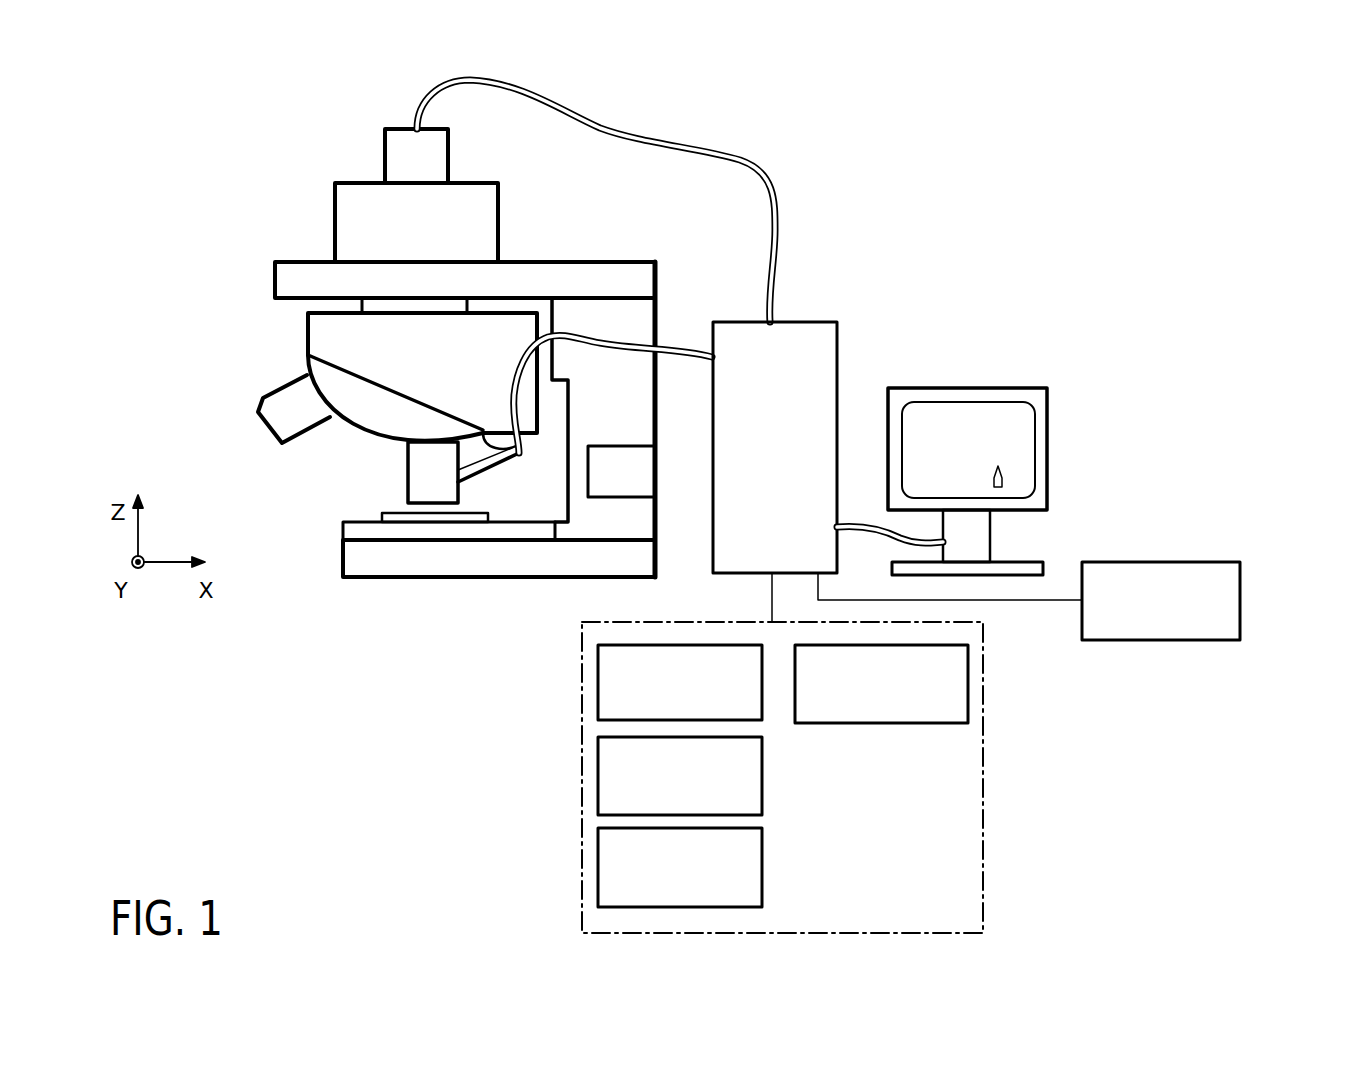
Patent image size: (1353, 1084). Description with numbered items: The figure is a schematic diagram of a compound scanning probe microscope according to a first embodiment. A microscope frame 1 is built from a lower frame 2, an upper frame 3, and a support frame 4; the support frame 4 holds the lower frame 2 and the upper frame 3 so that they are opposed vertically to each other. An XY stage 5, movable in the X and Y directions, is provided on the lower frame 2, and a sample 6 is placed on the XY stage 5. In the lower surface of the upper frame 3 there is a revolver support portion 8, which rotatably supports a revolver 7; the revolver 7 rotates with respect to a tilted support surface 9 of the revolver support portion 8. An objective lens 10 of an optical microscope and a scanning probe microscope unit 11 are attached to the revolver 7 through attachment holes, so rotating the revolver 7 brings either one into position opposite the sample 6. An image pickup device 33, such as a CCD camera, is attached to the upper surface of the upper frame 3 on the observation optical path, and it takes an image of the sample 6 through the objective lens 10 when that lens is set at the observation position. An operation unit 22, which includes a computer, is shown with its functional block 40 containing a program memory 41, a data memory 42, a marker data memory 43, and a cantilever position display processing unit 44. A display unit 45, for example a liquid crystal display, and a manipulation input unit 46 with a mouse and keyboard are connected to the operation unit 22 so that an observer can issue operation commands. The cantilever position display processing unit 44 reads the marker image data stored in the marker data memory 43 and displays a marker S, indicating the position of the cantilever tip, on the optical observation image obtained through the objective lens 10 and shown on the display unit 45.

The microscope frame 1 is at (588, 259).
The lower frame 2 is at (343, 556).
The upper frame 3 is at (275, 270).
The support frame 4 is at (655, 420).
The XY stage 5 is at (343, 523).
The sample 6 is at (463, 512).
The revolver 7 is at (307, 357).
The revolver support portion 8 is at (308, 316).
The tilted support surface 9 is at (520, 452).
The objective lens 10 is at (262, 402).
The scanning probe microscope unit 11 is at (408, 468).
The operation unit 22 is at (840, 333).
The image pickup device 33 is at (449, 156).
The functional block 40 is at (985, 800).
The program memory 41 is at (598, 683).
The data memory 42 is at (598, 778).
The marker data memory 43 is at (598, 868).
The cantilever position display processing unit 44 is at (970, 680).
The display unit 45 is at (1047, 438).
The manipulation input unit 46 is at (1243, 598).
The marker S is at (1005, 475).